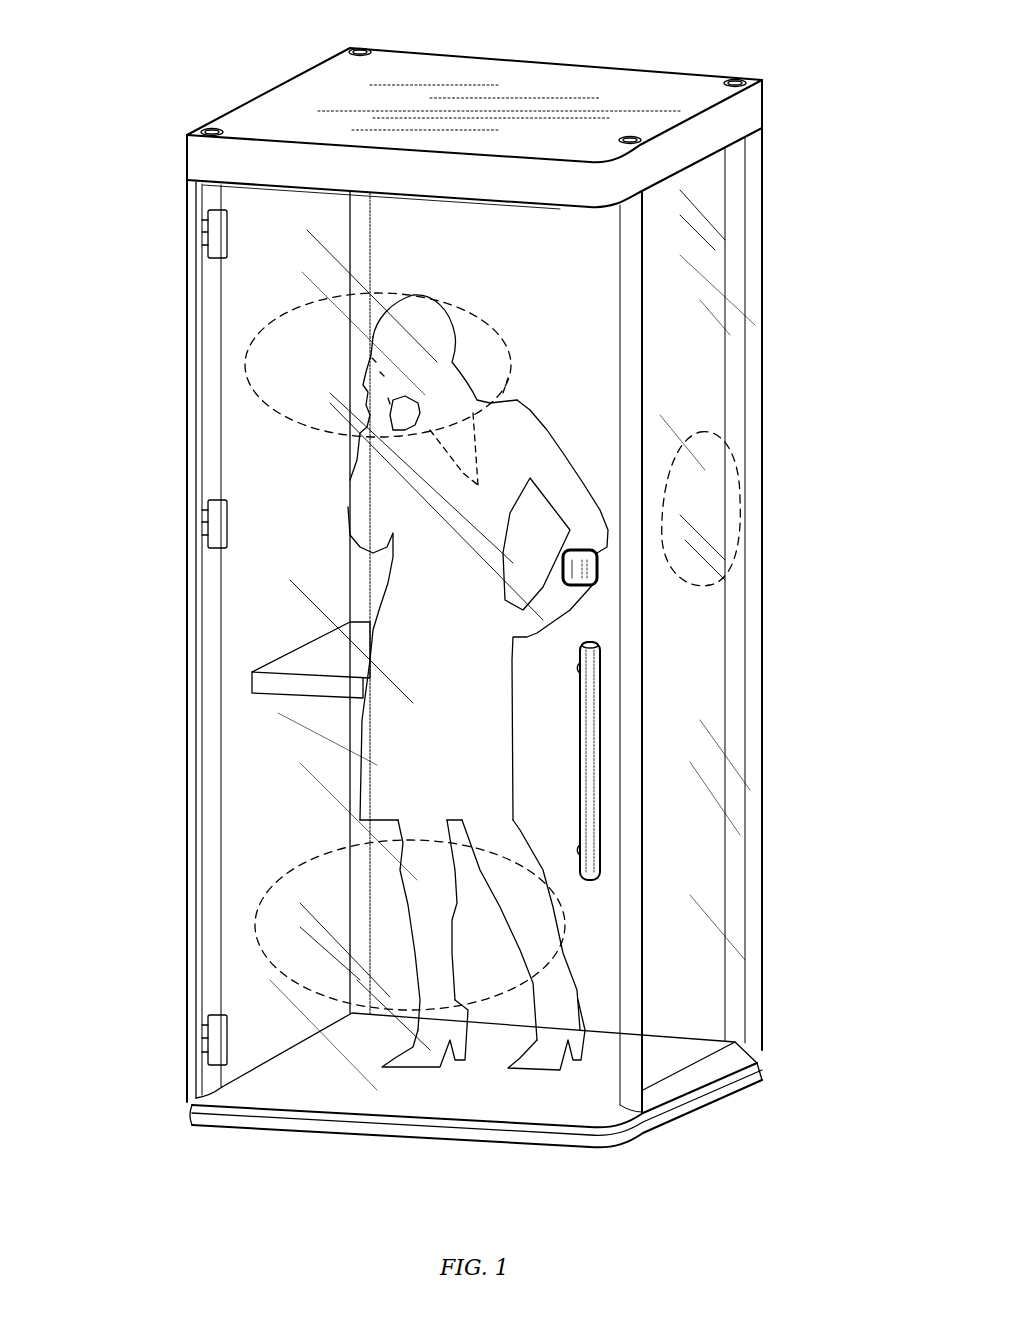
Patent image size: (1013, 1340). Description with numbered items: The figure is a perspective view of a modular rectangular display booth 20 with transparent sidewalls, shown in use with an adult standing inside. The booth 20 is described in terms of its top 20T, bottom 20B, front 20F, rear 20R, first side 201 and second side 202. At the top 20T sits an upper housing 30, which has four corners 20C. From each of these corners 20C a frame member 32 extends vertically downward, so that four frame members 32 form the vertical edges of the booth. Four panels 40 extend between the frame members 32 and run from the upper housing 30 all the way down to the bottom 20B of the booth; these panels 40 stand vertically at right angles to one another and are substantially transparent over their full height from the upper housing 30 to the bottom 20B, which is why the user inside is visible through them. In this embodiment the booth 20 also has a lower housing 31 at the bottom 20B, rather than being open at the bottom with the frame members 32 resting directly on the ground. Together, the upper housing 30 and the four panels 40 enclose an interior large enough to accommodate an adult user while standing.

The display booth 20 is at (162, 977).
The top 20T is at (586, 95).
The bottom 20B is at (340, 1127).
The front 20F is at (245, 628).
The rear 20R is at (763, 472).
The corners 20C is at (360, 50).
The upper housing 30 is at (763, 110).
The lower housing 31 is at (720, 1085).
The frame members 32 is at (187, 318).
The panels 40 is at (706, 855).
The first side 201 is at (187, 400).
The second side 202 is at (722, 712).